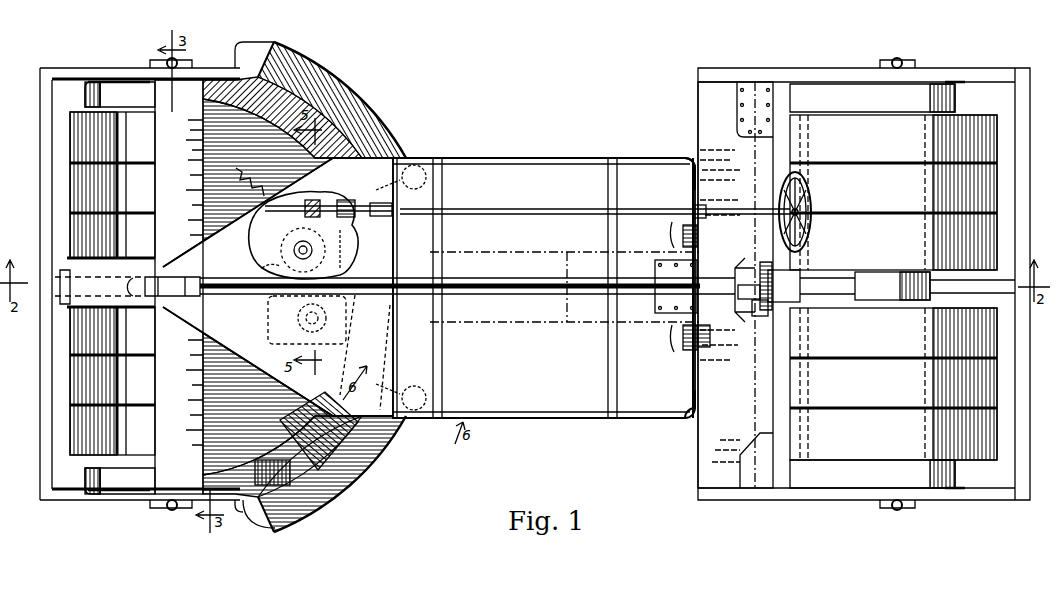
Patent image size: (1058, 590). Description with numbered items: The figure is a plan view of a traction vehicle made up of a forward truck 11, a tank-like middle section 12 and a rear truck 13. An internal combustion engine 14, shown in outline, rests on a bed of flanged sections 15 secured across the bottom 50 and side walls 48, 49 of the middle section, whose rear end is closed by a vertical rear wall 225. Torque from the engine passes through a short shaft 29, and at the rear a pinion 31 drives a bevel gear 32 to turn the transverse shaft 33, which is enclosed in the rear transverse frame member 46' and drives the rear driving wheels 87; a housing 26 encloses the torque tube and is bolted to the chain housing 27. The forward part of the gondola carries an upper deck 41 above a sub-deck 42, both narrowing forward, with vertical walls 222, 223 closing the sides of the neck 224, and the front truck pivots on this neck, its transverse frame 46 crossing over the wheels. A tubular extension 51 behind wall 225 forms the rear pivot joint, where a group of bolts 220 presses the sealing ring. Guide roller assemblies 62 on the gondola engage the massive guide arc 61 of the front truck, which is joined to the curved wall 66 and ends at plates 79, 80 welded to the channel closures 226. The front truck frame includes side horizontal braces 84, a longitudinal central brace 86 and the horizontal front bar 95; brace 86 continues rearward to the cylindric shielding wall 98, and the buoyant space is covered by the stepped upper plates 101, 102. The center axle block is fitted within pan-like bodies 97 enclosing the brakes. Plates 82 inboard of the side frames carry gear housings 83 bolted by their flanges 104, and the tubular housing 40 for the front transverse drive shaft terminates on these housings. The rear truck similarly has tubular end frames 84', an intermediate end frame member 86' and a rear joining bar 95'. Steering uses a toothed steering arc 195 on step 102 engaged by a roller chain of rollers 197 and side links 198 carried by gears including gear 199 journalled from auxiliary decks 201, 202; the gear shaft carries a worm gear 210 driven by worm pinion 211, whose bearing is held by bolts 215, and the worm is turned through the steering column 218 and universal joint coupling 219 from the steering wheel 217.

The forward truck 11 is at (377, 75).
The middle section 12 is at (550, 147).
The rear truck 13 is at (677, 90).
The internal combustion engine 14 is at (513, 262).
The flanged sections 15 is at (442, 195).
The housing 26 is at (487, 280).
The housing 27 is at (655, 268).
The short shaft 29 is at (735, 276).
The pinion 31 is at (736, 302).
The bevel gear 32 is at (752, 312).
The transverse shaft 33 is at (780, 286).
The housing 40 is at (100, 385).
The upper deck 41 is at (278, 287).
The sub-deck 42 is at (265, 236).
The transverse frame 46 is at (179, 287).
The transverse frame member 46' is at (735, 285).
The side wall 48 is at (510, 166).
The side wall 49 is at (522, 416).
The bottom 50 is at (583, 341).
The tubular extension 51 is at (708, 338).
The guide arc 61 is at (390, 461).
The guide roller assemblies 62 is at (425, 156).
The curved wall 66 is at (333, 428).
The plate 79 is at (252, 526).
The plate 80 is at (250, 42).
The plate 82 is at (100, 84).
The gear housings 83 is at (150, 484).
The side horizontal braces 84 is at (140, 287).
The tubular end frames 84' is at (856, 287).
The longitudinal central brace 86 is at (109, 277).
The intermediate end frame member 86' is at (907, 293).
The rear driving wheels 87 is at (533, 286).
The horizontal front bar 95 is at (35, 284).
The rear joining bar 95' is at (1001, 284).
The pan-like bodies 97 is at (932, 284).
The cylindric shielding wall 98 is at (285, 478).
The upper horizontal plate 101 is at (268, 170).
The upper horizontal plate 102 is at (258, 420).
The flange 104 is at (80, 288).
The steering arc 195 is at (240, 170).
The rollers 197 is at (307, 320).
The side links 198 is at (275, 275).
The gear 199 is at (322, 318).
The auxiliary deck 201 is at (345, 248).
The auxiliary deck 202 is at (358, 330).
The worm gear 210 is at (280, 248).
The worm pinion 211 is at (305, 198).
The bolts 215 is at (320, 205).
The steering wheel 217 is at (804, 225).
The steering column 218 is at (542, 212).
The universal joint coupling means 219 is at (372, 216).
The bolts 220 is at (672, 236).
The vertical wall 222 is at (222, 342).
The vertical wall 223 is at (183, 250).
The neck 224 is at (160, 310).
The vertical rear wall 225 is at (697, 176).
The closures 226 is at (274, 42).